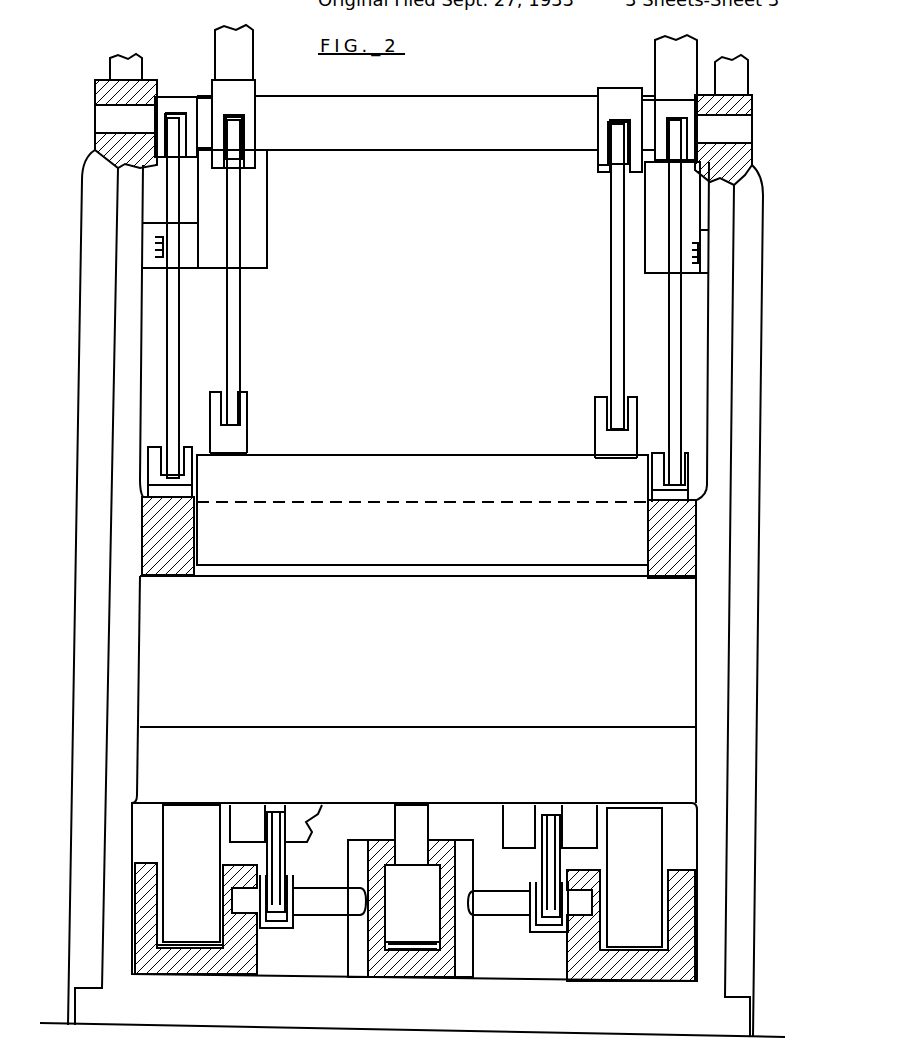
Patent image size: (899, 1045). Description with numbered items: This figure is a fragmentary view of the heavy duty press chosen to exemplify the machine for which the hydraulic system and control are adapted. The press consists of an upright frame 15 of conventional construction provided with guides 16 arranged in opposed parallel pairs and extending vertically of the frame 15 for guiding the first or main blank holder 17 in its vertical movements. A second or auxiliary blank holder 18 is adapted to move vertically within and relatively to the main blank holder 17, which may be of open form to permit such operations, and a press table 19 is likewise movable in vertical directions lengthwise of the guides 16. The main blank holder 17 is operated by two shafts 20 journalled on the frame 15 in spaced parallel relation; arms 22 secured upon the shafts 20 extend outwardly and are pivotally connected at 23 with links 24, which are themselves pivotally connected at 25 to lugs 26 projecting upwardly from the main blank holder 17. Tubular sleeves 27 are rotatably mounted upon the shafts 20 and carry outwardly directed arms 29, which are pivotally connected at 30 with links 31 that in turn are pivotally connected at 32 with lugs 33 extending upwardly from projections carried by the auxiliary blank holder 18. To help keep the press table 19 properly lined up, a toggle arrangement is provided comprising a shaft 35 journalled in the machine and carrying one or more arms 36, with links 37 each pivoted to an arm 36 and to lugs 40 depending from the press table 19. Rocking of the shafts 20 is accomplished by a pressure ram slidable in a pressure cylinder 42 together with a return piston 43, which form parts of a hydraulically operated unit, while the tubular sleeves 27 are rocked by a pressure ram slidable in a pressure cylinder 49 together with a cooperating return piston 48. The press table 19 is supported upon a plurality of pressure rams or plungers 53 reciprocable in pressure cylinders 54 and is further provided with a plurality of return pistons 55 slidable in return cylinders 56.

The upright frame 15 is at (87, 560).
The guides 16 is at (141, 648).
The first or main blank holder 17 is at (174, 568).
The second or auxiliary blank holder 18 is at (422, 510).
The press table 19 is at (414, 871).
The shafts 20 is at (738, 128).
The arms 22 is at (190, 95).
The pivotal connection 23 is at (168, 132).
The links 24 is at (176, 346).
The pivotal connection 25 is at (182, 449).
The lugs 26 is at (153, 488).
The tubular sleeves 27 is at (472, 153).
The outwardly directed arms 29 is at (245, 126).
The pivotal connection 30 is at (596, 160).
The links 31 is at (234, 313).
The pivotal connection 32 is at (238, 408).
The lugs 33 is at (217, 434).
The shaft 35 is at (327, 904).
The arms 36 is at (294, 882).
The links 37 is at (285, 857).
The lugs 40 is at (305, 815).
The pressure cylinder 42 is at (652, 220).
The return piston 43 is at (667, 46).
The return piston 48 is at (242, 66).
The pressure cylinder 49 is at (258, 202).
The pressure rams or plungers 53 is at (412, 877).
The pressure cylinders 54 is at (254, 950).
The return pistons 55 is at (412, 877).
The return cylinders 56 is at (443, 953).